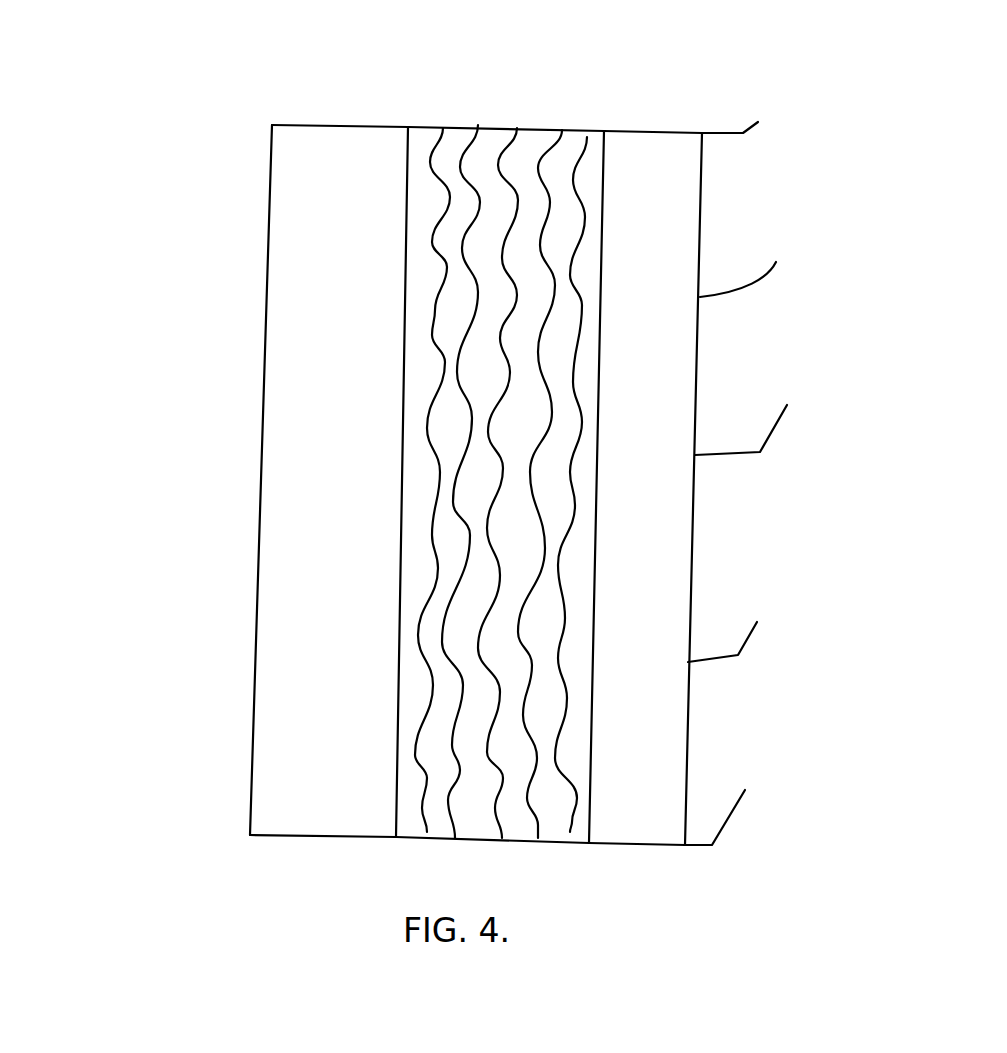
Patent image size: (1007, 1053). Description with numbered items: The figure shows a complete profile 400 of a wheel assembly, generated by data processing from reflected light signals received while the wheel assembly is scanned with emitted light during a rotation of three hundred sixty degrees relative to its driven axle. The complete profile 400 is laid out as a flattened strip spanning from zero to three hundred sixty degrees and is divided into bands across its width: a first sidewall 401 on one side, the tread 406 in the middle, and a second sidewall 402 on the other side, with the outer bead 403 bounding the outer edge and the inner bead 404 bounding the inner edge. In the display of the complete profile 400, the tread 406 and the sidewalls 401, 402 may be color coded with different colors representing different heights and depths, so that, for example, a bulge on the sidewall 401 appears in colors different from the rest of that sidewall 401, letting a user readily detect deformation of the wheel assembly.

The complete profile 400 is at (155, 123).
The sidewall 401 is at (334, 100).
The sidewall 402 is at (671, 121).
The outer bead 403 is at (267, 288).
The inner bead 404 is at (707, 233).
The tread 406 is at (499, 113).